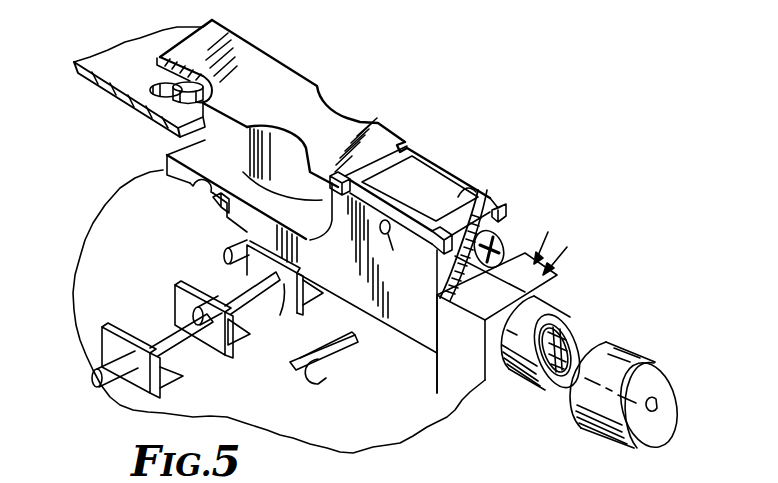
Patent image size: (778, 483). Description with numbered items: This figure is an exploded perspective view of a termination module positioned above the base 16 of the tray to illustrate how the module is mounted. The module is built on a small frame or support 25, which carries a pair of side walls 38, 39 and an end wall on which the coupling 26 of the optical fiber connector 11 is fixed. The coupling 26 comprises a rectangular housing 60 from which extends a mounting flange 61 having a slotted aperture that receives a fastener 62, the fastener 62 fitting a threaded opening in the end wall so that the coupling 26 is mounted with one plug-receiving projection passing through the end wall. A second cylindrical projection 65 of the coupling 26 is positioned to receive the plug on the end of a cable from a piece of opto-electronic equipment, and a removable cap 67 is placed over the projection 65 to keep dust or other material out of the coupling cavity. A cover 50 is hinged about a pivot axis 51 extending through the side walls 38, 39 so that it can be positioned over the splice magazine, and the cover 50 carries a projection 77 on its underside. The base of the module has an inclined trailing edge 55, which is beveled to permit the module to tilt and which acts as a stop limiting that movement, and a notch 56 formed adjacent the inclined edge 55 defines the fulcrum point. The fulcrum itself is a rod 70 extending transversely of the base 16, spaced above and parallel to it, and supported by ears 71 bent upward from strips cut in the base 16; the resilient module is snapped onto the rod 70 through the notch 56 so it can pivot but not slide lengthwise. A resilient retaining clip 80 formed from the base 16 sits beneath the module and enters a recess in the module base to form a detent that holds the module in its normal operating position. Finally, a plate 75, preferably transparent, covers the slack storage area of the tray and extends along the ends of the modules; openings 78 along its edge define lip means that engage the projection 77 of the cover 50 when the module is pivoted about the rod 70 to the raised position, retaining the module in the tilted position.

The connector 11 is at (545, 234).
The base 16 is at (134, 405).
The frame or support 25 is at (385, 318).
The coupling 26 is at (570, 254).
The side wall 38 is at (413, 323).
The side wall 39 is at (447, 168).
The cover 50 is at (290, 82).
The pivot axis 51 is at (395, 253).
The inclined trailing edge 55 is at (142, 173).
The notch 56 is at (195, 194).
The rectangular housing 60 is at (463, 358).
The mounting flange 61 is at (473, 230).
The fastener 62 is at (503, 243).
The second cylindrical projection 65 is at (523, 378).
The removable cap 67 is at (638, 358).
The rod 70 is at (157, 343).
The ear 71 is at (237, 330).
The plate 75 is at (98, 80).
The projection 77 is at (207, 90).
The opening 78 is at (163, 83).
The resilient retaining clip 80 is at (325, 365).